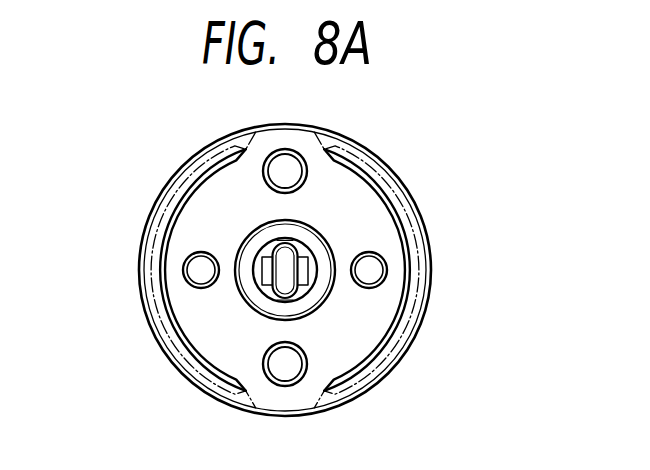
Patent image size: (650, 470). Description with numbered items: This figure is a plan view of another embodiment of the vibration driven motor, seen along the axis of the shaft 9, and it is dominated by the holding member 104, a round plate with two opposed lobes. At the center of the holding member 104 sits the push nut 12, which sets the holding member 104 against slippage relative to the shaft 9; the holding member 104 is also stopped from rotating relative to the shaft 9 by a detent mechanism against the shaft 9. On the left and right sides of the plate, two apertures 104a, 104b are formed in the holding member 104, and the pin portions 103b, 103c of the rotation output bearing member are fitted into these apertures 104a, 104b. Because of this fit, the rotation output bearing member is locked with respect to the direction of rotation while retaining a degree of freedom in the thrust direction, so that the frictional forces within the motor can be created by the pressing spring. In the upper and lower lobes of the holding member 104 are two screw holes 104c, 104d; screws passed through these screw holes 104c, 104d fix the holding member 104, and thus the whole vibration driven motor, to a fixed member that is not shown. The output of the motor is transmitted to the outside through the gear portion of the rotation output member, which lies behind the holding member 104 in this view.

The shaft 9 is at (272, 277).
The push nut 12 is at (318, 254).
The holding member 104 is at (353, 198).
The pin portion 103b is at (190, 257).
The pin portion 103c is at (370, 267).
The aperture 104a is at (198, 266).
The aperture 104b is at (383, 283).
The screw hole 104c is at (287, 172).
The screw hole 104d is at (287, 363).